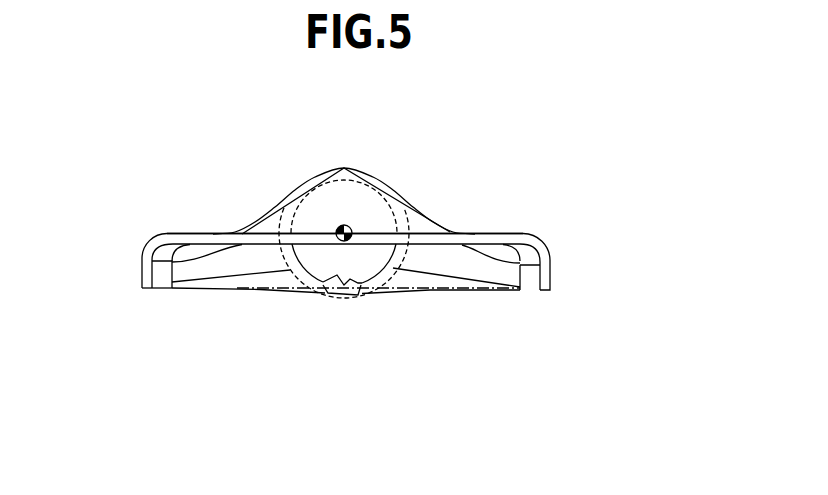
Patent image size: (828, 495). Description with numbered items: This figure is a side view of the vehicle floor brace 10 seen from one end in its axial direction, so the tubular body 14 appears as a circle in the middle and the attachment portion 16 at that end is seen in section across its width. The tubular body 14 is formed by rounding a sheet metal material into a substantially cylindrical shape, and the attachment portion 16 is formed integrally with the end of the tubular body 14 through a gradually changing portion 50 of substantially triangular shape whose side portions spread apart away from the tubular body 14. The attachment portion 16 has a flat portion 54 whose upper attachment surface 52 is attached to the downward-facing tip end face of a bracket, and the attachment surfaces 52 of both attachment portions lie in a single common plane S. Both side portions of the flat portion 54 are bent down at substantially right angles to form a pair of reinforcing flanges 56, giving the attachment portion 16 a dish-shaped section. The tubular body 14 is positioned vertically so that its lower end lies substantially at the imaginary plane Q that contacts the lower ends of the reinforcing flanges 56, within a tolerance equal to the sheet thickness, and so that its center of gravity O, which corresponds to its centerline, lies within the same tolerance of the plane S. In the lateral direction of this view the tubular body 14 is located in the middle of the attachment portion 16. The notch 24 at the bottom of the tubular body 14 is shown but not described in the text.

The vehicle floor brace 10 is at (438, 140).
The tubular body 14 is at (298, 168).
The attachment portion 16 is at (518, 214).
The notch 24 is at (339, 294).
The gradually changing portion 50 is at (365, 202).
The attachment surface 52 is at (425, 232).
The flat portion 54 is at (241, 238).
The reinforcing flange 56 is at (143, 273).
The center of gravity of the tubular body O is at (322, 216).
The imaginary plane Q is at (393, 280).